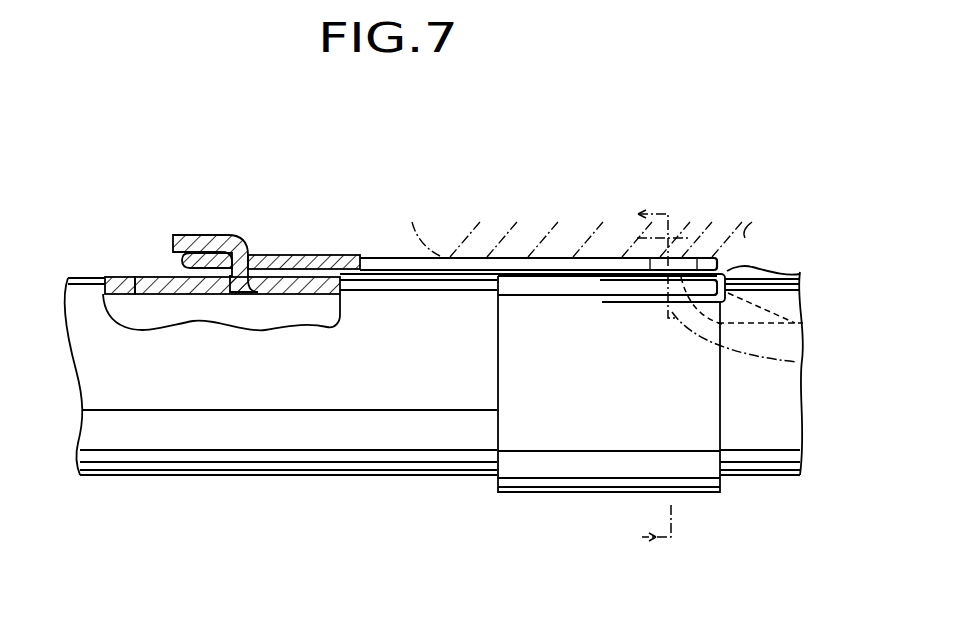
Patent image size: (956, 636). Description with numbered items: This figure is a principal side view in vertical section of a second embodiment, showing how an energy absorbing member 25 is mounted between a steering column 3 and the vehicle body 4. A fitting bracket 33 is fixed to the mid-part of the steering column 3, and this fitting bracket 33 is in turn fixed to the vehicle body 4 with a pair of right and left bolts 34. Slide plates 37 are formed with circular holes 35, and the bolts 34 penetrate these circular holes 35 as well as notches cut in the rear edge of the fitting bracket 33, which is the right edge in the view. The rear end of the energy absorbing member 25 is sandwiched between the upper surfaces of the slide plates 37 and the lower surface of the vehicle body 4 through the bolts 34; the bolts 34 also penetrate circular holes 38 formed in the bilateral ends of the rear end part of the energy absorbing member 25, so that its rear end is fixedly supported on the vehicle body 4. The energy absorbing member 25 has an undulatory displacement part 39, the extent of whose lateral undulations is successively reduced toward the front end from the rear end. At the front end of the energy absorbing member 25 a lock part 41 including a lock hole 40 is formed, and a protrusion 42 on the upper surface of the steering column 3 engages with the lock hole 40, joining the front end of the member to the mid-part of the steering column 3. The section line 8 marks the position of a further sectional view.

The steering column 3 is at (394, 452).
The vehicle body 4 is at (745, 238).
The section line 8- 8 is at (657, 376).
The energy absorbing member 25 is at (378, 257).
The fitting bracket 33 is at (572, 462).
The bolts 34 is at (797, 362).
The circular holes 35 is at (803, 324).
The slide plates 37 is at (790, 277).
The circular holes 38 is at (690, 256).
The undulatory displacement part 39 is at (525, 259).
The lock hole 40 is at (280, 256).
The lock part 41 is at (183, 259).
The protrusion 42 is at (205, 236).